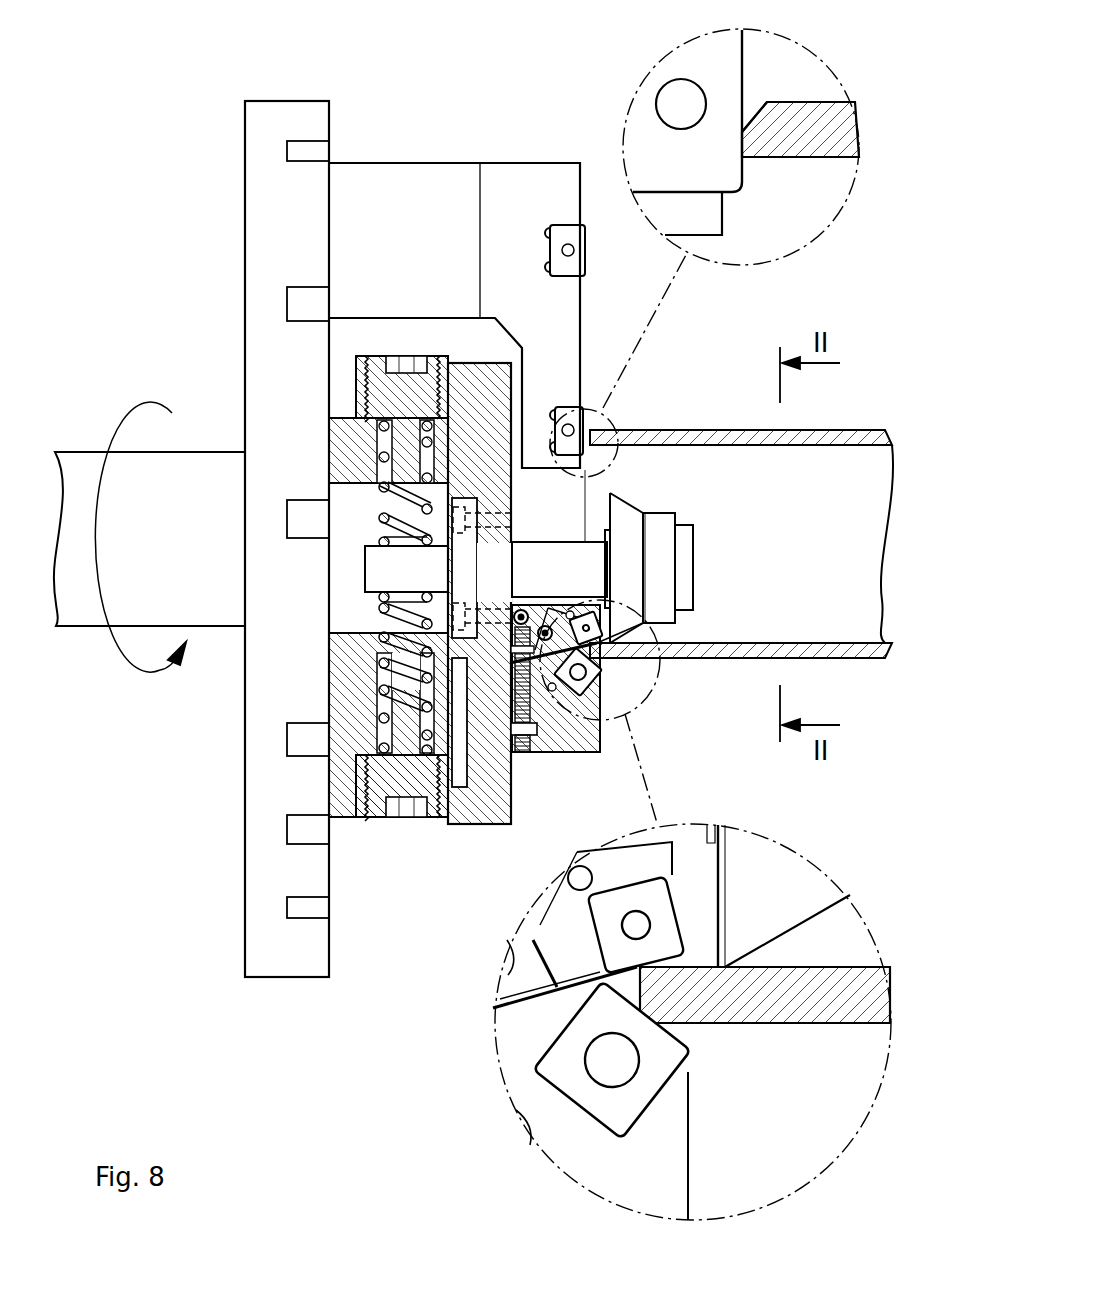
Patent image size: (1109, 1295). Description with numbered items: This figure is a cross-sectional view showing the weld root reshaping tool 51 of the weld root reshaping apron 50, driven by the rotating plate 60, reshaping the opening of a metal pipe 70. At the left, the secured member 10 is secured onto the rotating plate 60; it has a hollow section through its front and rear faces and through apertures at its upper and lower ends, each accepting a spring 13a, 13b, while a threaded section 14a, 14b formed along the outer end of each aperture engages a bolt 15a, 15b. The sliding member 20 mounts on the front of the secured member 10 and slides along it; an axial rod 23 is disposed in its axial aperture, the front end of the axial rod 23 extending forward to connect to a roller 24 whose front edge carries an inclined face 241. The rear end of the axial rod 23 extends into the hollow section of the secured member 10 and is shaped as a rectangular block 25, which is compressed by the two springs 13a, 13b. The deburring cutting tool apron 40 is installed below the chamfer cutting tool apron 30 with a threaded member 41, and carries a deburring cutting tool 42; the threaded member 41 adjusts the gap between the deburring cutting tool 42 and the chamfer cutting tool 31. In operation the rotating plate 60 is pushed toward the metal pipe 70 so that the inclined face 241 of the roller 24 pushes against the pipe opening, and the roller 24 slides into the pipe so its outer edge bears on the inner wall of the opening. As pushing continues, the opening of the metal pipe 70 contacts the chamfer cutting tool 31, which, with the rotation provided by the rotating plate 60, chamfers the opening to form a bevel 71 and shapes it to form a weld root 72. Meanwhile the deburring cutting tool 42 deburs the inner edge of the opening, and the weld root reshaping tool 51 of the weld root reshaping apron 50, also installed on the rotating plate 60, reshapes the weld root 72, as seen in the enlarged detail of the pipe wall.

The secured member 10 is at (343, 785).
The spring 13a is at (380, 663).
The spring 13b is at (380, 455).
The threaded section 14a is at (455, 795).
The threaded section 14b is at (356, 386).
The bolt 15a is at (408, 790).
The bolt 15b is at (406, 395).
The sliding member 20 is at (500, 385).
The axial rod 23 is at (563, 541).
The roller 24 is at (606, 562).
The inclined face 241 is at (634, 498).
The rectangular block 25 is at (372, 570).
The chamfer cutting tool apron 30 is at (690, 1162).
The chamfer cutting tool 31 is at (660, 1060).
The deburring cutting tool apron 40 is at (534, 607).
The threaded member 41 is at (515, 698).
The deburring cutting tool 42 is at (662, 910).
The weld root reshaping apron 50 is at (430, 178).
The weld root reshaping tool 51 is at (728, 58).
The rotating plate 60 is at (258, 221).
The metal pipe 70 is at (697, 437).
The bevel 71 is at (758, 112).
The weld root 72 is at (742, 150).